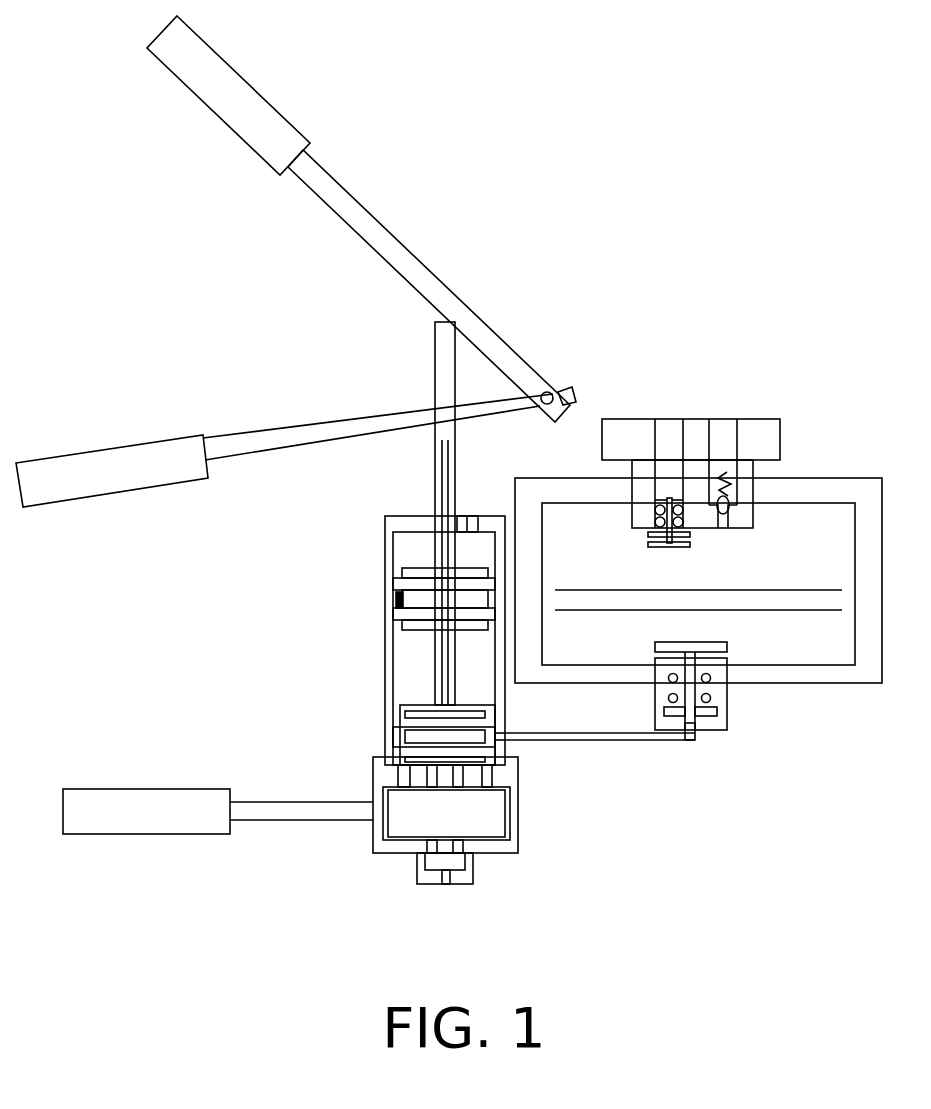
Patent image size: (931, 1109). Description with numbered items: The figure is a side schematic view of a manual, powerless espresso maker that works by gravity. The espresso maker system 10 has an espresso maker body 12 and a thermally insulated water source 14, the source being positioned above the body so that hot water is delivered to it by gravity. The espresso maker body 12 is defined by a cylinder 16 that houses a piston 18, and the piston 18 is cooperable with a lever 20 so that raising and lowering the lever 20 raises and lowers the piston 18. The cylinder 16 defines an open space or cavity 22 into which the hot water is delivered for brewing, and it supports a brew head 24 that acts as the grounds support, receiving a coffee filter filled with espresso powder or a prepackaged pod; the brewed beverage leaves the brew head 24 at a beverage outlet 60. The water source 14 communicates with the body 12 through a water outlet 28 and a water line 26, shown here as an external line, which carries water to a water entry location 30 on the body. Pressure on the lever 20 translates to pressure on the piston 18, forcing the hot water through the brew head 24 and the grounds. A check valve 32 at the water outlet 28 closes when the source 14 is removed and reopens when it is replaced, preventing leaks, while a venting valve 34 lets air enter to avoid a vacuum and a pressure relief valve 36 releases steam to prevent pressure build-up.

The espresso maker system 10 is at (492, 195).
The espresso maker body 12 is at (358, 624).
The thermally insulated water source 14 is at (790, 405).
The cylinder 16 is at (407, 543).
The piston 18 is at (417, 737).
The lever 20 is at (181, 140).
The cavity 22 is at (462, 661).
The brew head 24 is at (477, 813).
The water line 26 is at (550, 733).
The water outlet 28 is at (697, 740).
The water entry location 30 is at (500, 742).
The check valve 32 is at (713, 695).
The venting valve 34 is at (669, 498).
The pressure relief valve 36 is at (727, 472).
The beverage outlet 60 is at (463, 885).